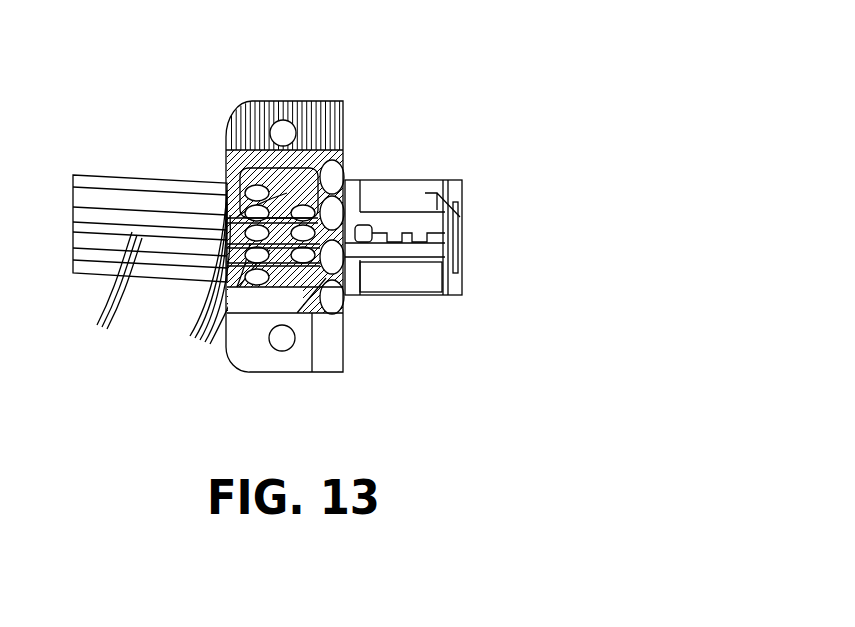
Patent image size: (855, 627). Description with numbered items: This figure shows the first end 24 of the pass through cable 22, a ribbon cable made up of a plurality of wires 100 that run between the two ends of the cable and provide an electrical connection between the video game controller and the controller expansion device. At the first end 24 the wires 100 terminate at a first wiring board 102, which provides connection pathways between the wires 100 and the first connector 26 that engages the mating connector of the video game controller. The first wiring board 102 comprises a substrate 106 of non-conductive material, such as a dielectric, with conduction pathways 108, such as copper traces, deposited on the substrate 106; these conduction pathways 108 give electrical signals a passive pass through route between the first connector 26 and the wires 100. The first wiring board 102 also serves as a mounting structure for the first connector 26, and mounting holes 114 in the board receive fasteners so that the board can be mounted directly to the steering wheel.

The pass through cable 22 is at (108, 173).
The first end 24 is at (399, 100).
The first connector 26 is at (416, 195).
The wires 100 is at (96, 289).
The first wiring board 102 is at (233, 353).
The substrate 106 is at (250, 128).
The conduction pathways 108 is at (217, 274).
The mounting holes 114 is at (283, 130).